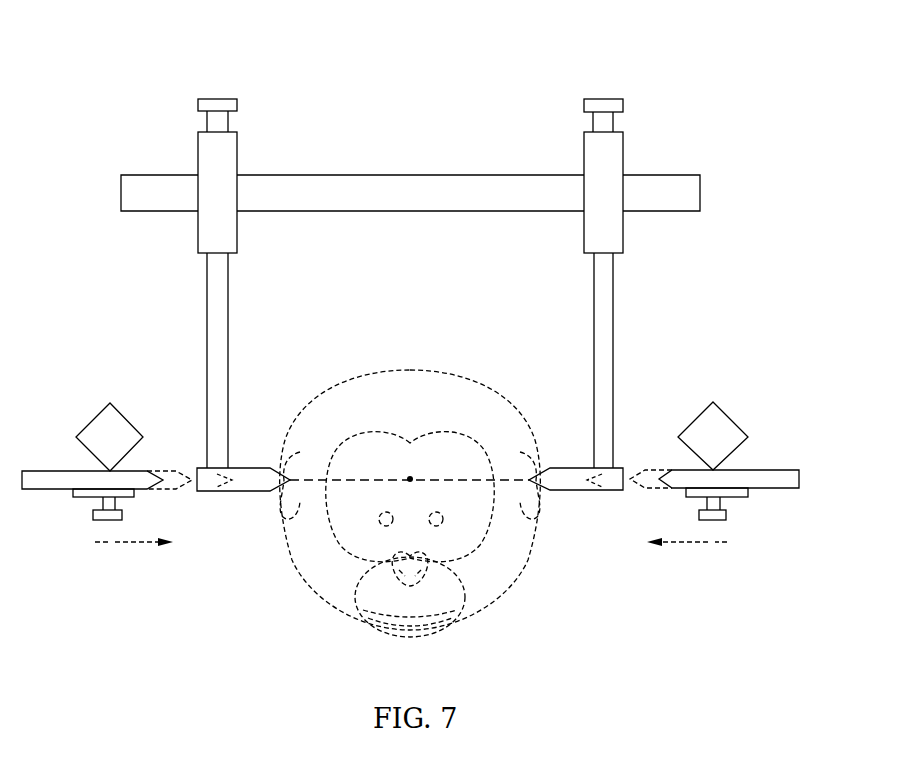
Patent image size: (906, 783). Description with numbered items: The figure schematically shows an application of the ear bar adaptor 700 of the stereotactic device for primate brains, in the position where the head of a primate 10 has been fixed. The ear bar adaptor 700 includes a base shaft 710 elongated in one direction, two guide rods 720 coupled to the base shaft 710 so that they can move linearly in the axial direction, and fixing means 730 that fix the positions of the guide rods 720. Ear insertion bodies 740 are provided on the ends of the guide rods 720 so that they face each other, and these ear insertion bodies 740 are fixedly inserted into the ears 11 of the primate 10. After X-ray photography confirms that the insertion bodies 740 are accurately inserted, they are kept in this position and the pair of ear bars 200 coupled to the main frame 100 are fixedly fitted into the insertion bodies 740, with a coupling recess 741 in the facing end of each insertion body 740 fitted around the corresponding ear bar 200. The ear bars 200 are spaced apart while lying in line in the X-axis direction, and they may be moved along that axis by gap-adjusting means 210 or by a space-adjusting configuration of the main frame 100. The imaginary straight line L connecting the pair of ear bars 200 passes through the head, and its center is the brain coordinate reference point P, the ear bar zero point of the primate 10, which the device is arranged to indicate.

The ear bar adaptor 700 is at (126, 70).
The base shaft 710 is at (377, 183).
The guide rod 720 is at (213, 300).
The fixing means 730 is at (211, 99).
The ear insertion body 740 is at (255, 483).
The coupling recess 741 is at (601, 482).
The main frame 100 is at (92, 420).
The ear bar 200 is at (38, 478).
The gap-adjusting means 210 is at (105, 521).
The primate 10 is at (526, 578).
The ear 11 is at (282, 507).
The brain coordinate reference point P is at (410, 477).
The imaginary straight line L is at (458, 478).